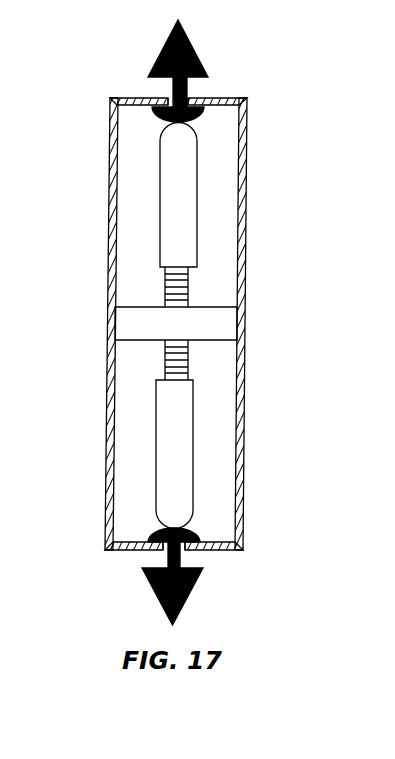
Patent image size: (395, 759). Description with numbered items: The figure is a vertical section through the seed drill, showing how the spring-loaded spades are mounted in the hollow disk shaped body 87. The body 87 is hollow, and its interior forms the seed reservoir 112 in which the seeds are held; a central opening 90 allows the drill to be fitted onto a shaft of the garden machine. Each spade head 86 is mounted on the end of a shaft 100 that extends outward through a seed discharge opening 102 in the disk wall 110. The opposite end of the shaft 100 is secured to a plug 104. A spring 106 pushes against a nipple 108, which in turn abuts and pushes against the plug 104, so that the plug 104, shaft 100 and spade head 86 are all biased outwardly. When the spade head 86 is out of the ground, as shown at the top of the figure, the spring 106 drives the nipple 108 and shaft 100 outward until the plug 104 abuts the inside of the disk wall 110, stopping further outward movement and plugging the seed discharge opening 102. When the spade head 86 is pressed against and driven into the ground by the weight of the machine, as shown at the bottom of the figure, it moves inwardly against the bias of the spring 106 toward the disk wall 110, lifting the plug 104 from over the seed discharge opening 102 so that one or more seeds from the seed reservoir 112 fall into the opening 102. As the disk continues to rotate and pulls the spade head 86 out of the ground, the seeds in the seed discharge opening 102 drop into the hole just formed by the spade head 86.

The spade head 86 is at (195, 44).
The hollow disk shaped body 87 is at (112, 242).
The central opening 90 is at (128, 320).
The shaft 100 is at (157, 84).
The seed discharge opening 102 is at (187, 92).
The plug 104 is at (153, 113).
The spring 106 is at (188, 293).
The nipple 108 is at (197, 183).
The disk wall 110 is at (227, 92).
The seed reservoir 112 is at (128, 192).